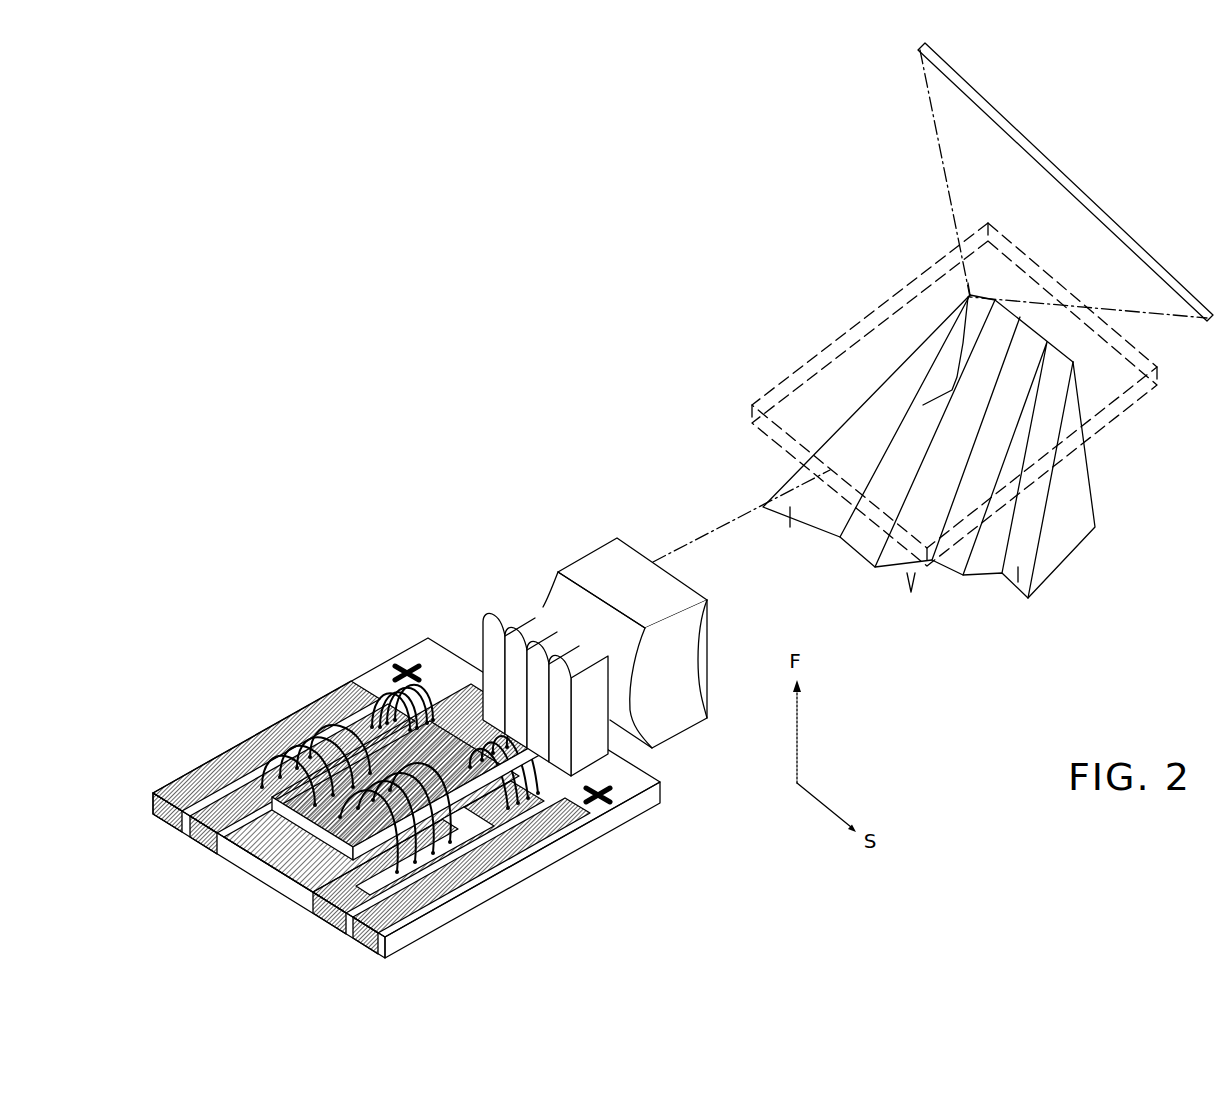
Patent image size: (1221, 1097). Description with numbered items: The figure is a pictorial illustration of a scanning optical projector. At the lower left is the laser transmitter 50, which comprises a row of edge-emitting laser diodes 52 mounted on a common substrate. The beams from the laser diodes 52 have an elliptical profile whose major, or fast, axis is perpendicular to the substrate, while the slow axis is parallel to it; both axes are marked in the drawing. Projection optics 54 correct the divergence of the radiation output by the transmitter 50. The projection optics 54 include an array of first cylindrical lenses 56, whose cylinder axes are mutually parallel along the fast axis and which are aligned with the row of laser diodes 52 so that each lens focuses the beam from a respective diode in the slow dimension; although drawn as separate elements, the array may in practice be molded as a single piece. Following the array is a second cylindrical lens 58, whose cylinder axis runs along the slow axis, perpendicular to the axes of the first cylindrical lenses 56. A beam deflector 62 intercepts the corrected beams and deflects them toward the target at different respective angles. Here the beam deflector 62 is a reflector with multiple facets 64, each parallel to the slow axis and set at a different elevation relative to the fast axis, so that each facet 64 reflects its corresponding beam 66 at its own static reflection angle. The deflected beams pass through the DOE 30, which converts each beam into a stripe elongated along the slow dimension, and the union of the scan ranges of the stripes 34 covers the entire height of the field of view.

The DOE 30 is at (835, 342).
The stripes 34 is at (1170, 268).
The laser transmitter 50 is at (343, 702).
The edge-emitting laser diodes 52 is at (307, 823).
The projection optics 54 is at (484, 572).
The first cylindrical lenses 56 is at (567, 657).
The second cylindrical lens 58 is at (593, 568).
The beam deflector 62 is at (1095, 512).
The facets 64 is at (830, 537).
The beam 66 is at (720, 527).